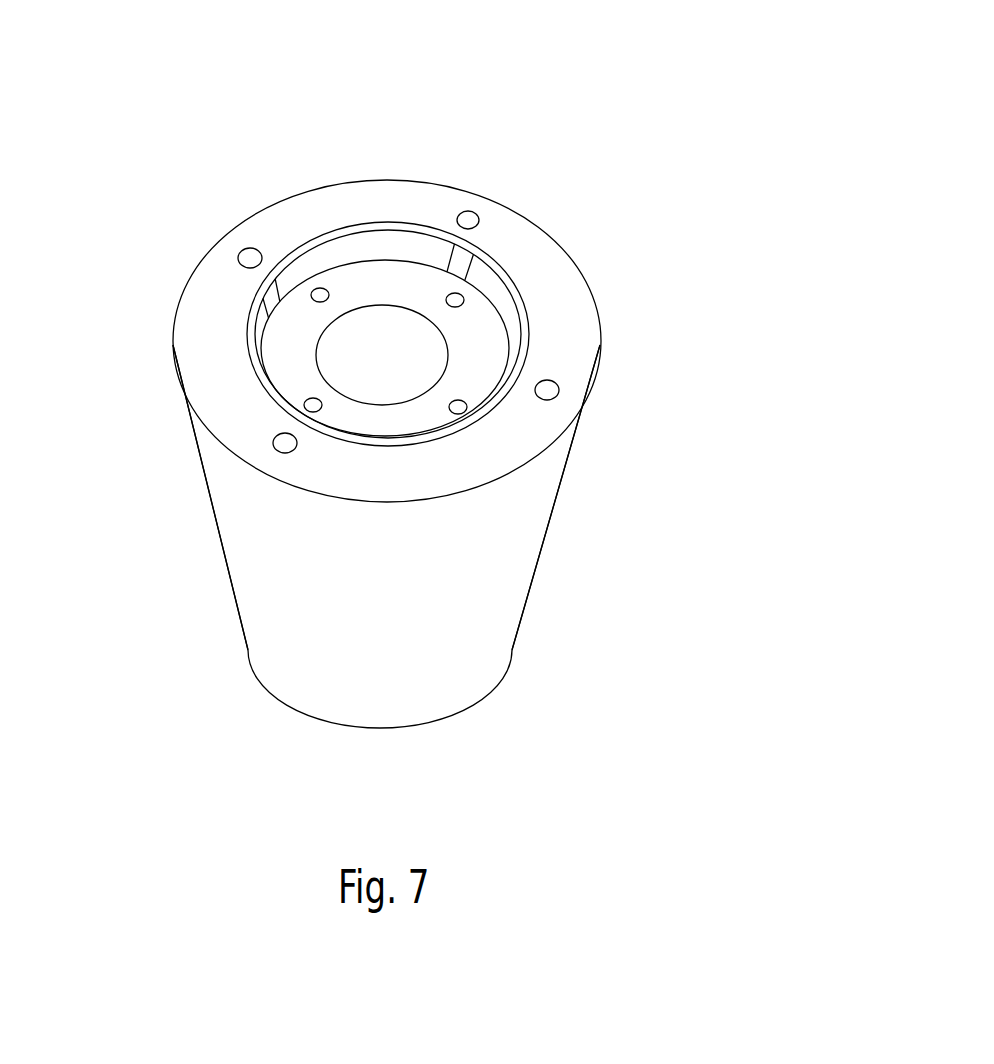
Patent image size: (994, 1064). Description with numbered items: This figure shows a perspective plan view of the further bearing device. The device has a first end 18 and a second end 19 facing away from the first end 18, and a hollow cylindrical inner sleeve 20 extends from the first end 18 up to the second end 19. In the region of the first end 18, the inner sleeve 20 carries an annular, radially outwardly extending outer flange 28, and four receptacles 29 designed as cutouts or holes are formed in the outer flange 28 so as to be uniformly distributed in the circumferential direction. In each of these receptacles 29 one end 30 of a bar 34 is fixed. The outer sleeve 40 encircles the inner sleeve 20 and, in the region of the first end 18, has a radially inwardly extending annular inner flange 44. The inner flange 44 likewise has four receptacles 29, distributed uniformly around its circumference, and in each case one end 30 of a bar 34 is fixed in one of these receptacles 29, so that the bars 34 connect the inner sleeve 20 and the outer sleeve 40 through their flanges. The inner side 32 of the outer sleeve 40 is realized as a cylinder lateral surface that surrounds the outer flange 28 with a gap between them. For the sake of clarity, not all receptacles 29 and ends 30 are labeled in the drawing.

The first end 18 is at (213, 220).
The second end 19 is at (485, 705).
The inner sleeve 20 is at (384, 337).
The outer flange 28 is at (470, 358).
The receptacles 29 is at (337, 290).
The end 30 is at (320, 288).
The inner side 32 is at (595, 117).
The bars 34 is at (455, 268).
The outer sleeve 40 is at (478, 560).
The inner flange 44 is at (218, 333).